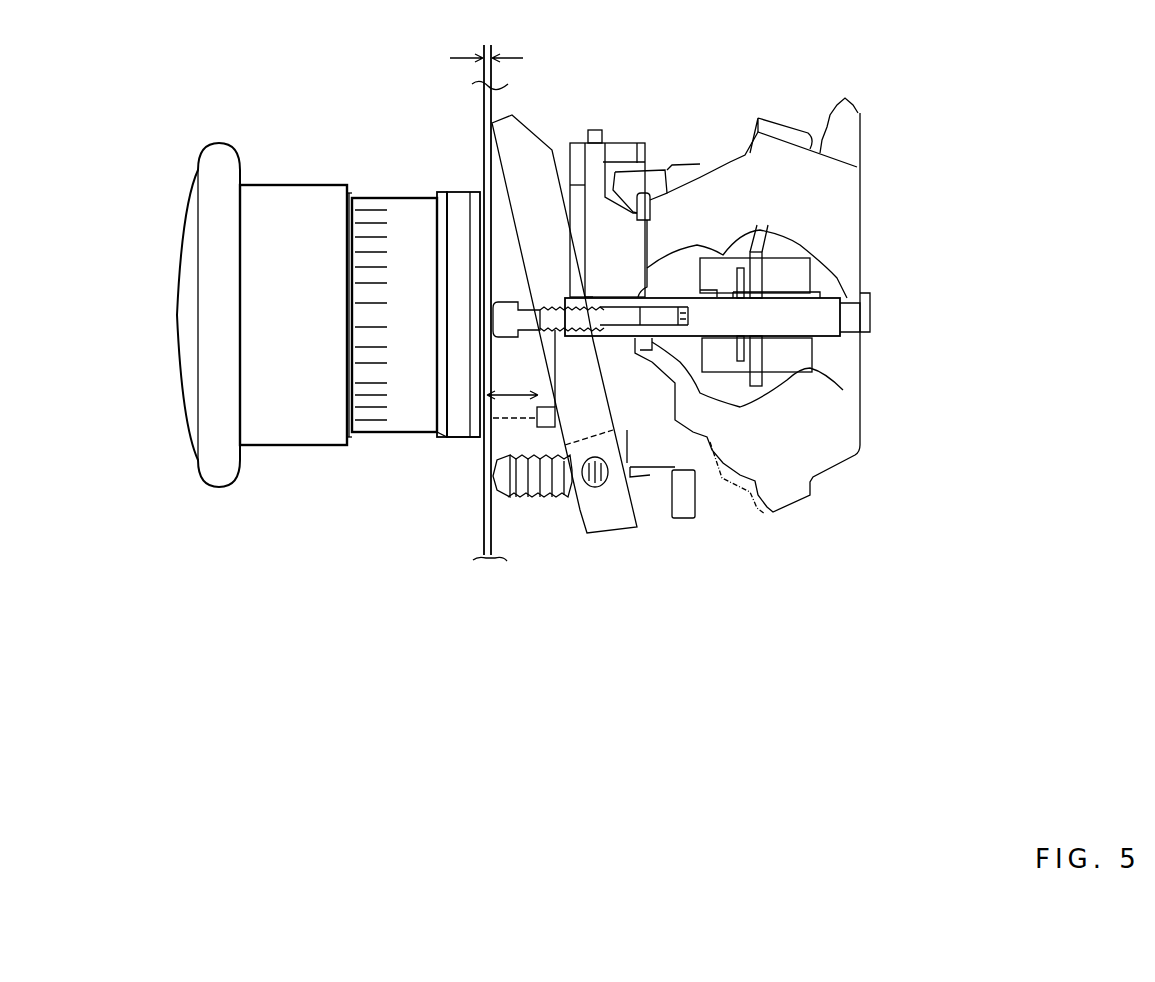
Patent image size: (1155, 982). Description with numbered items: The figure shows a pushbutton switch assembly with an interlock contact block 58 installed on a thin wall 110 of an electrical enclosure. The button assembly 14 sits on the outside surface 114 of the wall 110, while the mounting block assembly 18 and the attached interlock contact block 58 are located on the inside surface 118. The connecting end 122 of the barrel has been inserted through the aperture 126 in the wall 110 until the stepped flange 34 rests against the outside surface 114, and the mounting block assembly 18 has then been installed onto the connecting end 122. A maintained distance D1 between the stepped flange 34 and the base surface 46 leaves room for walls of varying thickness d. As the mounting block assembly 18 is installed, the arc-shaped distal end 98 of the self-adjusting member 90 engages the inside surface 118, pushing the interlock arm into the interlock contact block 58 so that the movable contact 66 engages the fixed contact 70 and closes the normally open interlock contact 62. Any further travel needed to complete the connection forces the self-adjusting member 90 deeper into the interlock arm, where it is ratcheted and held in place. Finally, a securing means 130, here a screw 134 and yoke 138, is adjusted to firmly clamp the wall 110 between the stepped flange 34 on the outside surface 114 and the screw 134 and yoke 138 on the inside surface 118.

The button assembly 14 is at (325, 128).
The mounting block assembly 18 is at (620, 118).
The stepped flange 34 is at (503, 253).
The surface 46 is at (535, 407).
The interlock contact block 58 is at (800, 204).
The interlock contact 62 is at (776, 358).
The movable contact 66 is at (740, 283).
The fixed contact 70 is at (720, 330).
The self-adjusting member 90 is at (615, 313).
The distal end 98 is at (498, 297).
The wall 110 is at (482, 117).
The outside surface 114 is at (470, 532).
The inside surface 118 is at (500, 537).
The connecting end 122 is at (437, 198).
The aperture 126 is at (483, 428).
The securing means 130 is at (657, 559).
The screw 134 is at (548, 497).
The yoke 138 is at (537, 143).